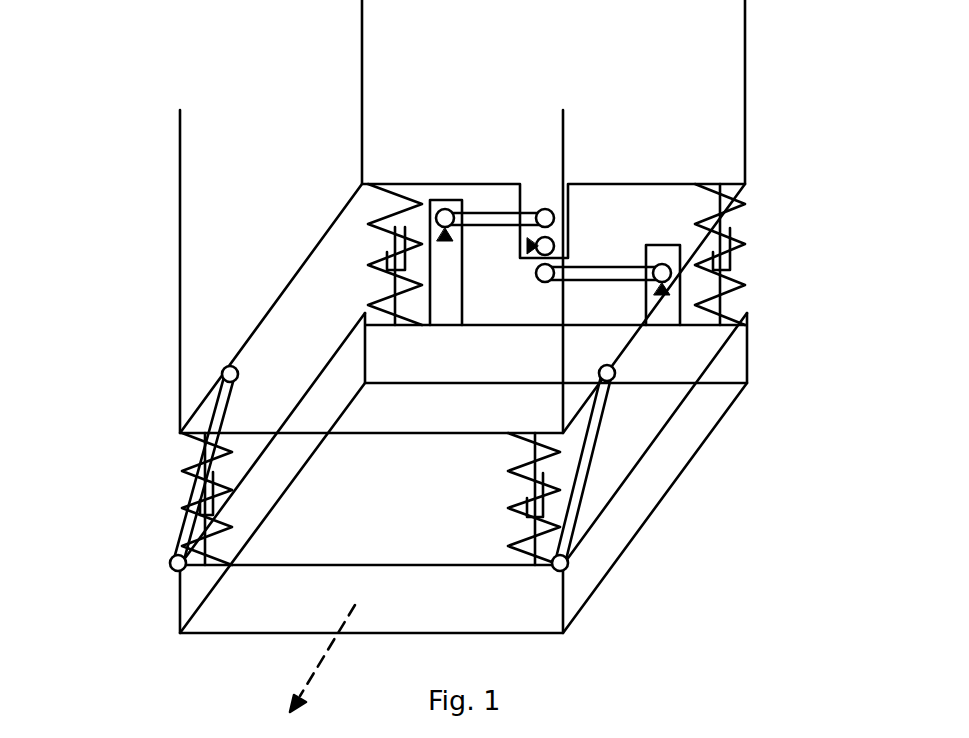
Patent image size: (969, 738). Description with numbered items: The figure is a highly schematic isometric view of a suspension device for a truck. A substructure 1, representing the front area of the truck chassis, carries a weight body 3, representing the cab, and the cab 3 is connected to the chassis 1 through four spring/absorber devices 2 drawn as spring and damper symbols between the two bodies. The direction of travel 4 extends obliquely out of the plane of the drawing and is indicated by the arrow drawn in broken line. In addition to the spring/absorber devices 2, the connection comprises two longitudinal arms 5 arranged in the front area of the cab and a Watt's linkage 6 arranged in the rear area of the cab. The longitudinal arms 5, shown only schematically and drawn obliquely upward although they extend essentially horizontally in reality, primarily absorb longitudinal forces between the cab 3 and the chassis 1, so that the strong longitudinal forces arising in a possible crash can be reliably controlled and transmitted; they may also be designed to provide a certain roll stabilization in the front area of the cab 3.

The substructure 1 is at (689, 538).
The spring/absorber device 2 is at (358, 233).
The weight body 3 is at (160, 139).
The direction of travel 4 is at (322, 658).
The longitudinal arm 5 is at (220, 407).
The Watt's linkage 6 is at (540, 179).